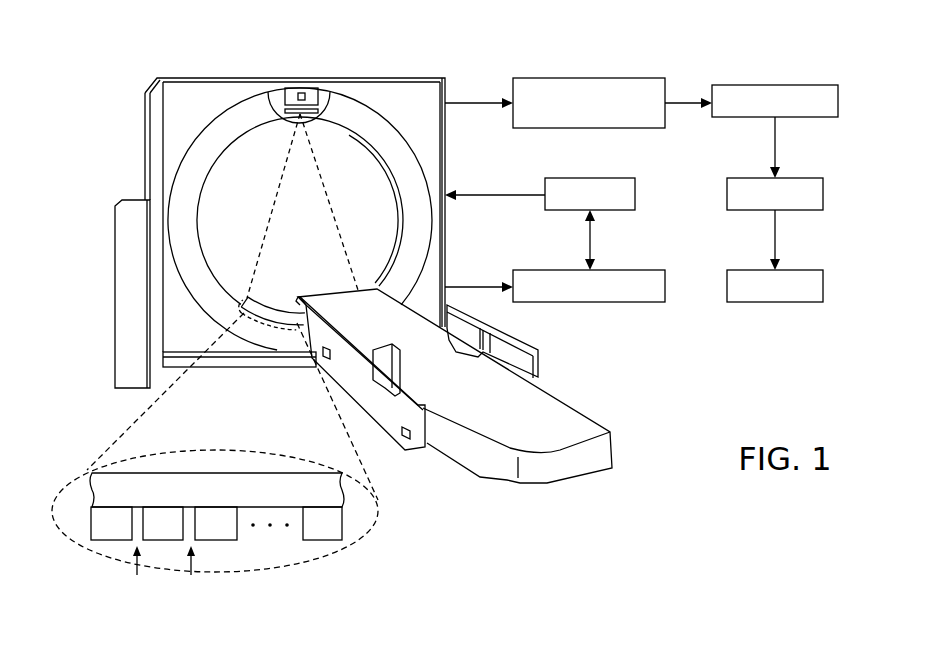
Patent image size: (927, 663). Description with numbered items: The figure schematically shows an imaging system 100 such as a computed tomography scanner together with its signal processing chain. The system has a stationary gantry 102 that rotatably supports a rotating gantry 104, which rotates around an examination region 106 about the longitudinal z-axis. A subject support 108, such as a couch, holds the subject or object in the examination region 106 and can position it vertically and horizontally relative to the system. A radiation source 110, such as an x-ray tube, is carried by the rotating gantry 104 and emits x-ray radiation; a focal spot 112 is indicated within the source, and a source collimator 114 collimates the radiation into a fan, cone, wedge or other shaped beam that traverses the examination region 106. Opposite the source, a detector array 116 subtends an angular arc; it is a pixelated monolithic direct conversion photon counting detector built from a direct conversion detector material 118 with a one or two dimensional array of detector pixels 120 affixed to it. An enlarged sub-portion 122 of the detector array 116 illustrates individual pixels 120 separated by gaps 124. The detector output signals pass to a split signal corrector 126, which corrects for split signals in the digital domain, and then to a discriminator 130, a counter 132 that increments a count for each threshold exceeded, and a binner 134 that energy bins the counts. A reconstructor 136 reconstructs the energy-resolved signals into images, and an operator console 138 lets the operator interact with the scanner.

The imaging system 100 is at (126, 64).
The stationary gantry 102 is at (152, 158).
The rotating gantry 104 is at (226, 112).
The examination region 106 is at (287, 233).
The subject support 108 is at (567, 433).
The radiation source 110 is at (320, 96).
The focal spot 112 is at (301, 92).
The source collimator 114 is at (272, 97).
The detector array 116 is at (256, 302).
The direct conversion detector material 118 is at (283, 473).
The detector pixels 120 is at (376, 552).
The sub-portion of the detector array 122 is at (225, 450).
The gaps 124 is at (164, 572).
The split signal corrector 126 is at (553, 78).
The discriminator 130 is at (838, 101).
The counter 132 is at (823, 194).
The binner 134 is at (823, 286).
The reconstructor 136 is at (553, 270).
The operator console 138 is at (553, 178).